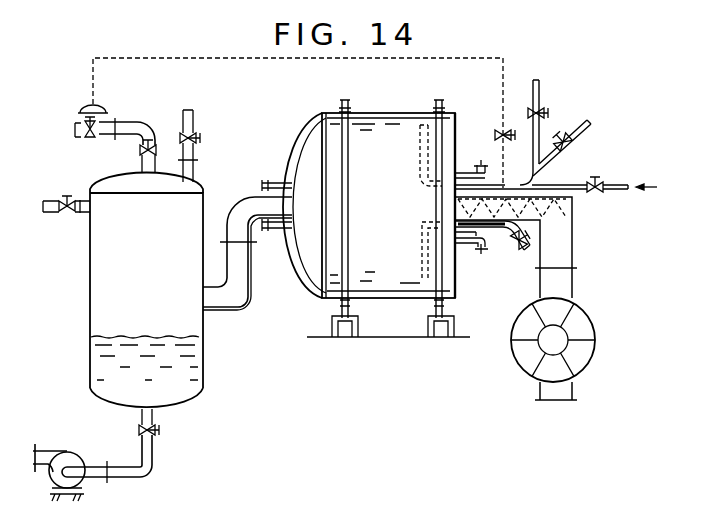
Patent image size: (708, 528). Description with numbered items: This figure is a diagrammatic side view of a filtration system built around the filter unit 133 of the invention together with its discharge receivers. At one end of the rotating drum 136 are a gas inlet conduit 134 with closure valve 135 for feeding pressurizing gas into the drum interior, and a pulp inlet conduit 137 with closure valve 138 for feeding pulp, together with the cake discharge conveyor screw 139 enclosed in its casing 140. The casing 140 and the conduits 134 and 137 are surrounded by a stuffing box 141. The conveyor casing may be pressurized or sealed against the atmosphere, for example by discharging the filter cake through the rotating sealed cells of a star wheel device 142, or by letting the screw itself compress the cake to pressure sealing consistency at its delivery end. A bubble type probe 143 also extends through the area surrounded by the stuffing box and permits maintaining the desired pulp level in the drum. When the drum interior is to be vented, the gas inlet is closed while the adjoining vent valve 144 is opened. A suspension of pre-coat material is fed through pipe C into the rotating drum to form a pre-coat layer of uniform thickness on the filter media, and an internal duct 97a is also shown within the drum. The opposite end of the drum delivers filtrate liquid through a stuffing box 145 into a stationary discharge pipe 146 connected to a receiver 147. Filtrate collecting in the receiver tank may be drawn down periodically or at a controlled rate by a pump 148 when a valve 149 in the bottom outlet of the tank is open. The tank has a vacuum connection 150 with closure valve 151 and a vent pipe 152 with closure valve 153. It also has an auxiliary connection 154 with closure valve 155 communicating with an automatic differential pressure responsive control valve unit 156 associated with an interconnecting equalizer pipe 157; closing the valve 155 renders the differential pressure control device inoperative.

The filter unit 133 is at (382, 109).
The gas inlet conduit 134 is at (555, 157).
The closure valve 135 is at (574, 144).
The drum 136 is at (457, 126).
The pulp inlet conduit 137 is at (521, 256).
The closure valve 138 is at (481, 255).
The cake discharge conveyor screw 139 is at (575, 213).
The casing 140 is at (574, 201).
The stuffing box 141 is at (478, 262).
The star wheel device 142 is at (597, 346).
The bubble type probe 143 is at (419, 256).
The vent valve 144 is at (603, 185).
The stuffing box 145 is at (262, 180).
The discharge duct or pipe 146 is at (250, 202).
The receiver 147 is at (157, 255).
The pump 148 is at (63, 452).
The valve 149 is at (138, 433).
The vacuum connection 150 is at (84, 216).
The closure valve 151 is at (64, 197).
The vent pipe 152 is at (195, 159).
The closure valve 153 is at (197, 136).
The auxiliary connection 154 is at (134, 123).
The closure valve 155 is at (141, 152).
The differential pressure responsive control valve unit 156 is at (85, 124).
The equalizer pipe 157 is at (270, 62).
The internal duct 97a is at (421, 157).
The pipe C is at (540, 94).